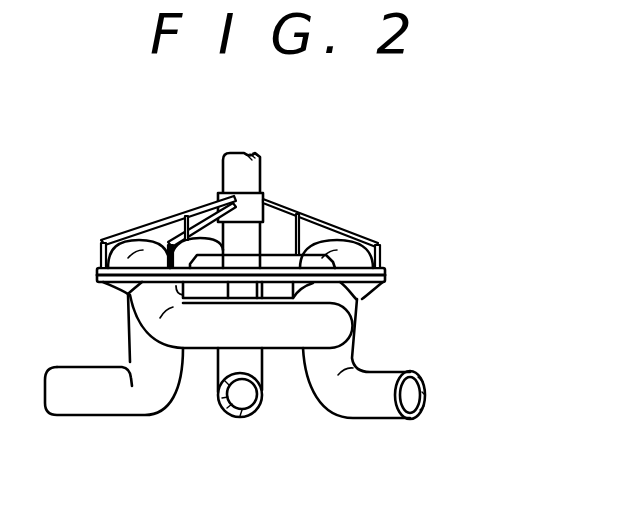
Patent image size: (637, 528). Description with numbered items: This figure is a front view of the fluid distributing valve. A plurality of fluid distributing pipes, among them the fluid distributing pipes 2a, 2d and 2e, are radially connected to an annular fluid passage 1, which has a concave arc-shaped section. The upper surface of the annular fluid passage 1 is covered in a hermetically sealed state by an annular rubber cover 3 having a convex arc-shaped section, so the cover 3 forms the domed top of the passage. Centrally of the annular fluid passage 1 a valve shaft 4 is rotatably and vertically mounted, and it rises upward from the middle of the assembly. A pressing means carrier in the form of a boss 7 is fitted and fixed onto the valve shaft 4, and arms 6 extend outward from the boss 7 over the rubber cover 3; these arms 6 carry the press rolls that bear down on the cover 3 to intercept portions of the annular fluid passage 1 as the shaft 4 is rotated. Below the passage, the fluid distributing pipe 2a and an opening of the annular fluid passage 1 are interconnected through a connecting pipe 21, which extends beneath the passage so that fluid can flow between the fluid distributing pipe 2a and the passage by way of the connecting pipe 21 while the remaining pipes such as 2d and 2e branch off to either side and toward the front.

The annular fluid passage 1 is at (268, 265).
The annular rubber cover 3 is at (338, 260).
The valve shaft 4 is at (248, 177).
The arms 6 is at (146, 224).
The boss 7 is at (248, 202).
The connecting pipe 21 is at (282, 337).
The fluid distributing pipe 2a is at (108, 405).
The fluid distributing pipe 2d is at (387, 405).
The fluid distributing pipe 2e is at (240, 397).